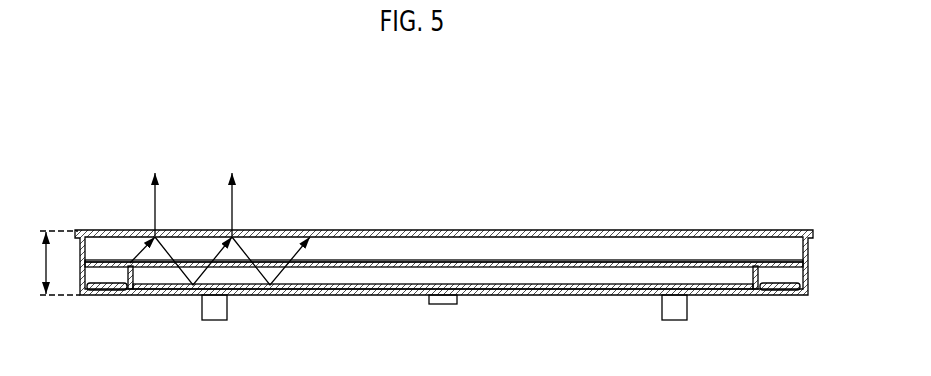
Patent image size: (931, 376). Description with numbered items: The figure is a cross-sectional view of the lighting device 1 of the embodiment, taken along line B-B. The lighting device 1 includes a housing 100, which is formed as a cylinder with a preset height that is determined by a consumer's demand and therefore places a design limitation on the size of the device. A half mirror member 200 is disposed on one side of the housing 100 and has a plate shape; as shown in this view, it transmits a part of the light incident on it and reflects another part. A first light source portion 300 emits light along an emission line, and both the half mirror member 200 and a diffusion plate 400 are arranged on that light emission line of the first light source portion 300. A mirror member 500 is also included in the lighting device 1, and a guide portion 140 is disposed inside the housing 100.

The lighting device 1 is at (56, 110).
The housing 100 is at (808, 283).
The guide portion 140 is at (705, 275).
The half mirror member 200 is at (450, 232).
The first light source portion 300 is at (103, 290).
The diffusion plate 400 is at (788, 260).
The mirror member 500 is at (382, 288).